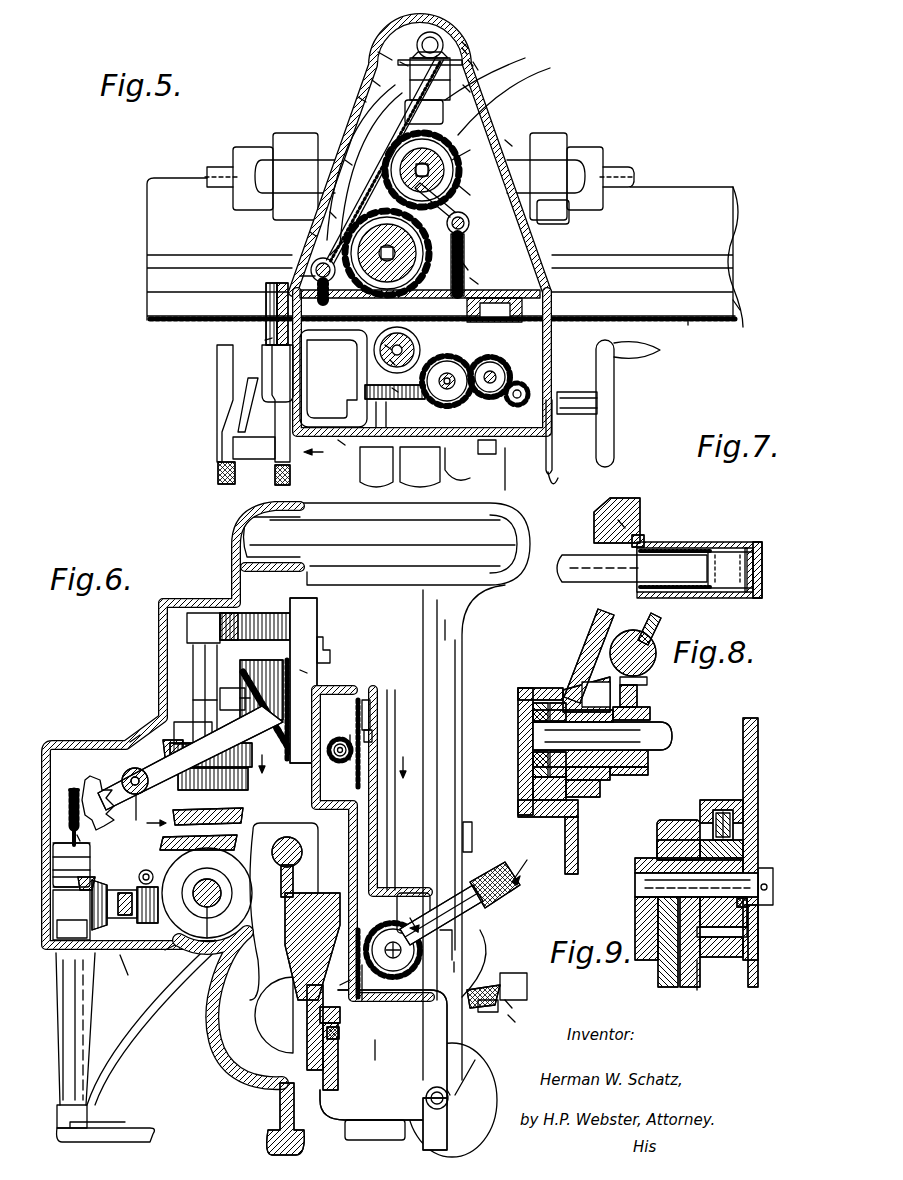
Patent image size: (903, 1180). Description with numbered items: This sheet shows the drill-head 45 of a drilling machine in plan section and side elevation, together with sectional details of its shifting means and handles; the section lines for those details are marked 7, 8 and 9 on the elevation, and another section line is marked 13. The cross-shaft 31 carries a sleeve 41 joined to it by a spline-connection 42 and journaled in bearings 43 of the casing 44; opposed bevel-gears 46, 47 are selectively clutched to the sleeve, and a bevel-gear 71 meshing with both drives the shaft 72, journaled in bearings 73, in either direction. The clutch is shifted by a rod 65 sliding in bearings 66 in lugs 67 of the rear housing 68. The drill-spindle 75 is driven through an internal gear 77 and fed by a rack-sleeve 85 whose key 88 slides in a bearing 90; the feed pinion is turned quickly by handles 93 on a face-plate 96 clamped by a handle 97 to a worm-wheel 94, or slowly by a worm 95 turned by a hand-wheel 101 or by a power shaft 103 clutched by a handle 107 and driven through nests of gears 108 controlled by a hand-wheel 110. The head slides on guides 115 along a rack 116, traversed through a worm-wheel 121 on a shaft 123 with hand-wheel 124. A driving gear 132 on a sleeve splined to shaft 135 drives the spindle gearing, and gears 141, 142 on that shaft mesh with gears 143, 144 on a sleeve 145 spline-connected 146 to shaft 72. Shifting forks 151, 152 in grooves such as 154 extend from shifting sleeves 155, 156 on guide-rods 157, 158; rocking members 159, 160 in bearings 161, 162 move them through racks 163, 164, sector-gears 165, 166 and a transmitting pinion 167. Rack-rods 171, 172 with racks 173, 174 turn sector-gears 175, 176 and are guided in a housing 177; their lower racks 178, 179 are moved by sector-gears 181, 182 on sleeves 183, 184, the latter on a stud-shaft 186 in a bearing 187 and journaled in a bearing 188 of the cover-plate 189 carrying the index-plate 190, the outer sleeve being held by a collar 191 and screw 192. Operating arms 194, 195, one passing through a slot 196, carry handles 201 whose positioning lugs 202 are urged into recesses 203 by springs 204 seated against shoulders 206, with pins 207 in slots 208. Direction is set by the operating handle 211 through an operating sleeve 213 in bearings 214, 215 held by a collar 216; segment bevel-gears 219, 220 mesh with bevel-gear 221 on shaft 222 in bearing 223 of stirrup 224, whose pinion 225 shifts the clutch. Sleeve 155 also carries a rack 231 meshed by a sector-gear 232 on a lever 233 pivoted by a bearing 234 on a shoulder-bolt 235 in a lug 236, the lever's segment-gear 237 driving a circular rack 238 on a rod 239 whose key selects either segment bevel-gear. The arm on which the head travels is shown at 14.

In FIG. 5, the bed rail 14 is at (688, 189).
In FIG. 6, the bed rail 14 is at (168, 848).
In FIG. 5, the cross-shaft 31 is at (618, 172).
In FIG. 6, the cross-shaft 31 is at (207, 940).
In FIG. 6, the sleeve 41 is at (209, 878).
In FIG. 6, the spline-connection 42 is at (195, 885).
In FIG. 5, the bearings 43 is at (255, 147).
In FIG. 5, the casing 44 is at (552, 293).
In FIG. 6, the casing 44 is at (320, 605).
In FIG. 5, the drill-head 45 is at (553, 435).
In FIG. 6, the drill-head 45 is at (465, 692).
In FIG. 5, the bevel-gear 46 is at (315, 140).
In FIG. 6, the bevel-gear 46 is at (160, 1022).
In FIG. 5, the bevel-gear 47 is at (500, 140).
In FIG. 5, the rod 65 is at (480, 90).
In FIG. 6, the rod 65 is at (158, 828).
In FIG. 5, the bearings 66 is at (515, 78).
In FIG. 5, the lugs 67 is at (380, 52).
In FIG. 6, the lugs 67 is at (53, 882).
In FIG. 5, the rear housing 68 is at (372, 80).
In FIG. 6, the bevel-gear 71 is at (300, 834).
In FIG. 5, the shaft 72 is at (505, 140).
In FIG. 6, the shaft 72 is at (195, 665).
In FIG. 6, the bearings 73 is at (187, 630).
In FIG. 5, the drill-spindle 75 is at (385, 345).
In FIG. 6, the drill-spindle 75 is at (345, 1135).
In FIG. 6, the internal gear 77 is at (245, 527).
In FIG. 5, the rack-sleeve 85 is at (390, 360).
In FIG. 5, the key 88 is at (392, 388).
In FIG. 5, the bearing 90 is at (341, 445).
In FIG. 5, the handles 93 is at (470, 478).
In FIG. 6, the handles 93 is at (519, 976).
In FIG. 5, the worm-wheel 94 is at (373, 414).
In FIG. 5, the worm 95 is at (530, 390).
In FIG. 5, the face-plate 96 is at (390, 470).
In FIG. 6, the face-plate 96 is at (478, 1075).
In FIG. 5, the handle 97 is at (513, 477).
In FIG. 5, the hand-wheel 101 is at (520, 372).
In FIG. 5, the shaft 103 is at (600, 398).
In FIG. 5, the handle 107 is at (552, 480).
In FIG. 5, the nests of gears 108 is at (420, 400).
In FIG. 5, the hand-wheel 110 is at (497, 450).
In FIG. 6, the hand-wheel 110 is at (472, 838).
In FIG. 5, the guides 115 is at (750, 311).
In FIG. 6, the guides 115 is at (340, 1075).
In FIG. 5, the rack 116 is at (692, 322).
In FIG. 6, the rack 116 is at (340, 1038).
In FIG. 5, the worm-wheel 121 is at (500, 362).
In FIG. 6, the shaft 123 is at (426, 1100).
In FIG. 5, the hand-wheel 124 is at (614, 428).
In FIG. 6, the hand-wheel 124 is at (395, 1140).
In FIG. 6, the driving gear 132 is at (185, 600).
In FIG. 5, the shaft 135 is at (330, 183).
In FIG. 6, the gear 141 is at (240, 712).
In FIG. 5, the gear 142 is at (397, 327).
In FIG. 6, the gear 142 is at (232, 792).
In FIG. 5, the gear 143 is at (525, 132).
In FIG. 6, the gear 143 is at (160, 712).
In FIG. 6, the gear 144 is at (130, 742).
In FIG. 5, the sleeve 145 is at (445, 205).
In FIG. 5, the spline-connection 146 is at (458, 168).
In FIG. 6, the shifting fork 151 is at (325, 650).
In FIG. 5, the shifting fork 152 is at (457, 185).
In FIG. 5, the annular groove 154 is at (430, 91).
In FIG. 6, the annular groove 154 is at (193, 733).
In FIG. 5, the shifting sleeve 155 is at (310, 232).
In FIG. 8, the shifting sleeve 155 is at (648, 665).
In FIG. 6, the shifting sleeve 155 is at (307, 673).
In FIG. 5, the shifting sleeve 156 is at (466, 246).
In FIG. 5, the guide-rod 157 is at (330, 212).
In FIG. 8, the guide-rod 157 is at (647, 682).
In FIG. 6, the guide-rod 157 is at (290, 596).
In FIG. 5, the guide-rod 158 is at (470, 221).
In FIG. 6, the guide-rod 158 is at (232, 700).
In FIG. 5, the rocking member 159 is at (300, 276).
In FIG. 8, the rocking member 159 is at (650, 760).
In FIG. 5, the rocking member 160 is at (392, 332).
In FIG. 8, the rocking member 160 is at (672, 735).
In FIG. 6, the rocking member 160 is at (358, 748).
In FIG. 5, the bearing 161 is at (311, 262).
In FIG. 8, the bearing 161 is at (587, 694).
In FIG. 5, the bearing 162 is at (485, 302).
In FIG. 8, the rack 163 is at (572, 672).
In FIG. 6, the rack 163 is at (360, 687).
In FIG. 5, the rack 164 is at (546, 192).
In FIG. 5, the sector-gear 165 is at (310, 252).
In FIG. 8, the sector-gear 165 is at (640, 700).
In FIG. 6, the sector-gear 165 is at (330, 738).
In FIG. 5, the sector-gear 166 is at (470, 278).
In FIG. 5, the transmitting pinion 167 is at (462, 262).
In FIG. 5, the rack-rod 171 is at (265, 340).
In FIG. 9, the rack-rod 171 is at (715, 810).
In FIG. 6, the rack-rod 171 is at (380, 835).
In FIG. 5, the rack-rod 172 is at (278, 373).
In FIG. 8, the rack-rod 172 is at (533, 788).
In FIG. 9, the rack-rod 172 is at (758, 812).
In FIG. 6, the rack-rod 172 is at (372, 725).
In FIG. 8, the rack 173 is at (533, 775).
In FIG. 6, the rack 173 is at (352, 793).
In FIG. 8, the rack 174 is at (601, 786).
In FIG. 6, the rack 174 is at (372, 700).
In FIG. 8, the sector-gear 175 is at (518, 745).
In FIG. 6, the sector-gear 175 is at (355, 752).
In FIG. 8, the sector-gear 176 is at (612, 773).
In FIG. 6, the sector-gear 176 is at (372, 705).
In FIG. 8, the housing 177 is at (518, 808).
In FIG. 9, the housing 177 is at (733, 800).
In FIG. 6, the housing 177 is at (378, 855).
In FIG. 9, the lower rack 178 is at (678, 831).
In FIG. 6, the lower rack 178 is at (340, 1020).
In FIG. 9, the lower rack 179 is at (735, 835).
In FIG. 5, the sector-gear 181 is at (277, 330).
In FIG. 9, the sector-gear 181 is at (657, 852).
In FIG. 6, the sector-gear 181 is at (378, 1045).
In FIG. 5, the sector-gear 182 is at (266, 312).
In FIG. 9, the sector-gear 182 is at (758, 858).
In FIG. 6, the sector-gear 182 is at (400, 893).
In FIG. 9, the sleeve 183 is at (723, 960).
In FIG. 9, the sleeve 184 is at (645, 905).
In FIG. 6, the sleeve 184 is at (412, 950).
In FIG. 9, the stud-shaft 186 is at (772, 875).
In FIG. 6, the stud-shaft 186 is at (394, 940).
In FIG. 9, the bearing 187 is at (768, 890).
In FIG. 9, the bearing 188 is at (635, 863).
In FIG. 5, the cover-plate 189 is at (225, 385).
In FIG. 9, the cover-plate 189 is at (662, 975).
In FIG. 6, the cover-plate 189 is at (450, 928).
In FIG. 5, the index-plate 190 is at (240, 450).
In FIG. 7, the index-plate 190 is at (618, 520).
In FIG. 6, the index-plate 190 is at (486, 937).
In FIG. 9, the collar 191 is at (756, 975).
In FIG. 9, the screw 192 is at (750, 905).
In FIG. 5, the operating arm 194 is at (220, 462).
In FIG. 7, the operating arm 194 is at (580, 562).
In FIG. 9, the operating arm 194 is at (640, 955).
In FIG. 6, the operating arm 194 is at (465, 895).
In FIG. 5, the operating arm 195 is at (290, 468).
In FIG. 9, the operating arm 195 is at (694, 990).
In FIG. 6, the operating arm 195 is at (370, 990).
In FIG. 5, the slot 196 is at (248, 382).
In FIG. 9, the slot 196 is at (700, 965).
In FIG. 7, the handle 201 is at (705, 545).
In FIG. 6, the handle 201 is at (500, 895).
In FIG. 5, the positioning lug 202 is at (254, 457).
In FIG. 7, the positioning lug 202 is at (645, 538).
In FIG. 6, the positioning lug 202 is at (488, 990).
In FIG. 7, the recesses 203 is at (650, 530).
In FIG. 6, the recesses 203 is at (485, 975).
In FIG. 7, the spring 204 is at (680, 545).
In FIG. 7, the shoulder 206 is at (730, 570).
In FIG. 7, the pin 207 is at (757, 545).
In FIG. 6, the pin 207 is at (515, 1022).
In FIG. 7, the slots 208 is at (745, 540).
In FIG. 6, the slots 208 is at (512, 1008).
In FIG. 6, the operating handle 211 is at (125, 1125).
In FIG. 5, the operating sleeve 213 is at (462, 42).
In FIG. 6, the operating sleeve 213 is at (53, 925).
In FIG. 6, the bearing 214 is at (88, 1083).
In FIG. 6, the bearing 215 is at (53, 855).
In FIG. 6, the collar 216 is at (53, 845).
In FIG. 6, the segment bevel-gear 219 is at (125, 975).
In FIG. 5, the segment bevel-gear 220 is at (417, 50).
In FIG. 6, the segment bevel-gear 220 is at (144, 871).
In FIG. 5, the bevel-gear 221 is at (462, 48).
In FIG. 6, the bevel-gear 221 is at (170, 952).
In FIG. 6, the shaft 222 is at (106, 899).
In FIG. 5, the bearing 223 is at (468, 60).
In FIG. 6, the bearing 223 is at (128, 920).
In FIG. 5, the stirrup 224 is at (473, 62).
In FIG. 6, the pinion 225 is at (152, 924).
In FIG. 8, the rack 231 is at (655, 635).
In FIG. 6, the rack 231 is at (248, 684).
In FIG. 5, the sector-gear 232 is at (356, 220).
In FIG. 6, the sector-gear 232 is at (240, 698).
In FIG. 5, the lever 233 is at (345, 160).
In FIG. 6, the lever 233 is at (160, 745).
In FIG. 5, the bearing 234 is at (345, 135).
In FIG. 6, the bearing 234 is at (140, 770).
In FIG. 6, the pivot shoulder-bolt 235 is at (138, 814).
In FIG. 5, the lug 236 is at (358, 97).
In FIG. 6, the lug 236 is at (146, 790).
In FIG. 5, the segment-gear 237 is at (400, 62).
In FIG. 6, the segment-gear 237 is at (92, 785).
In FIG. 6, the circular rack 238 is at (70, 792).
In FIG. 5, the rod 239 is at (445, 28).
In FIG. 6, the rod 239 is at (77, 840).
In FIG. 6, the section line 7 is at (463, 884).
In FIG. 6, the section line 8 is at (338, 770).
In FIG. 6, the section line 9 is at (397, 979).
In FIG. 5, the section line 13 is at (311, 452).